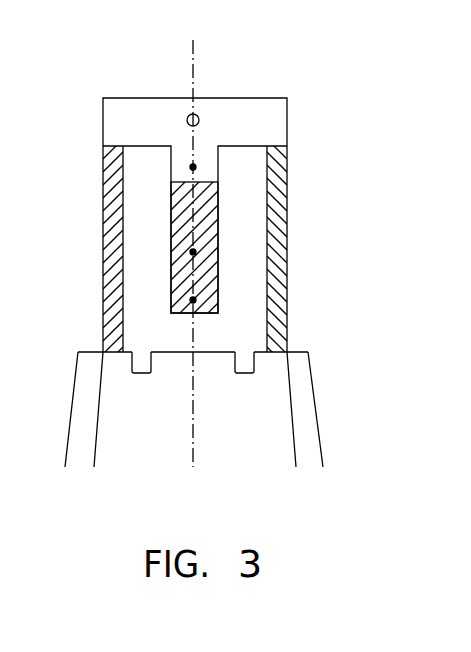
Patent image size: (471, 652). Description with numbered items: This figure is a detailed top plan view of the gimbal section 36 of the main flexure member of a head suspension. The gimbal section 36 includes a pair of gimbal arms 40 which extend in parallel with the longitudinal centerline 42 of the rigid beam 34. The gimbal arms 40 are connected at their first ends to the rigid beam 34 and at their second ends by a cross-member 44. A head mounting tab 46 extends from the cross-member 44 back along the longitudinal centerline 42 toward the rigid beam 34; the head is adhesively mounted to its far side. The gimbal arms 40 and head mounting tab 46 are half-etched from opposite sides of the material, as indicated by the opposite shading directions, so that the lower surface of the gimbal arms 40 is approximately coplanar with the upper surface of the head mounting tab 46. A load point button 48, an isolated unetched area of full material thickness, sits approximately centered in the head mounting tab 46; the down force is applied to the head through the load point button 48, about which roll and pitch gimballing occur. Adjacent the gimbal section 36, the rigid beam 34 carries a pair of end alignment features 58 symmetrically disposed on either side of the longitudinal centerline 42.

The rigid beam 34 is at (330, 352).
The gimbal section 36 is at (65, 98).
The gimbal arms 40 is at (110, 192).
The longitudinal centerline 42 is at (200, 57).
The cross-member 44 is at (157, 104).
The head mounting tab 46 is at (208, 208).
The load point button 48 is at (196, 253).
The end alignment features 58 is at (245, 374).